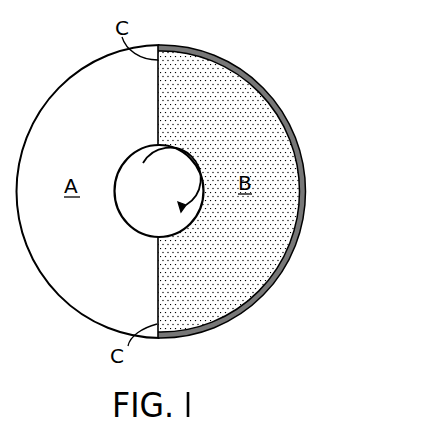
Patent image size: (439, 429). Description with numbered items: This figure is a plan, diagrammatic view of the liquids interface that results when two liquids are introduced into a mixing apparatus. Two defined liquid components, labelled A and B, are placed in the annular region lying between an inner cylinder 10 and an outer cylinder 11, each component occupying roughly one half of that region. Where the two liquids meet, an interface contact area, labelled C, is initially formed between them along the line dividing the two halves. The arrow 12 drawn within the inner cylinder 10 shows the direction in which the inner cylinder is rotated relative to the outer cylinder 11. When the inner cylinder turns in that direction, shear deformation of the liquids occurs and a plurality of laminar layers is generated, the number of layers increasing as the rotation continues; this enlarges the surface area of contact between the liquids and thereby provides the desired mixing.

The inner cylinder 10 is at (133, 220).
The outer cylinder 11 is at (301, 161).
The arrow 12 is at (180, 180).